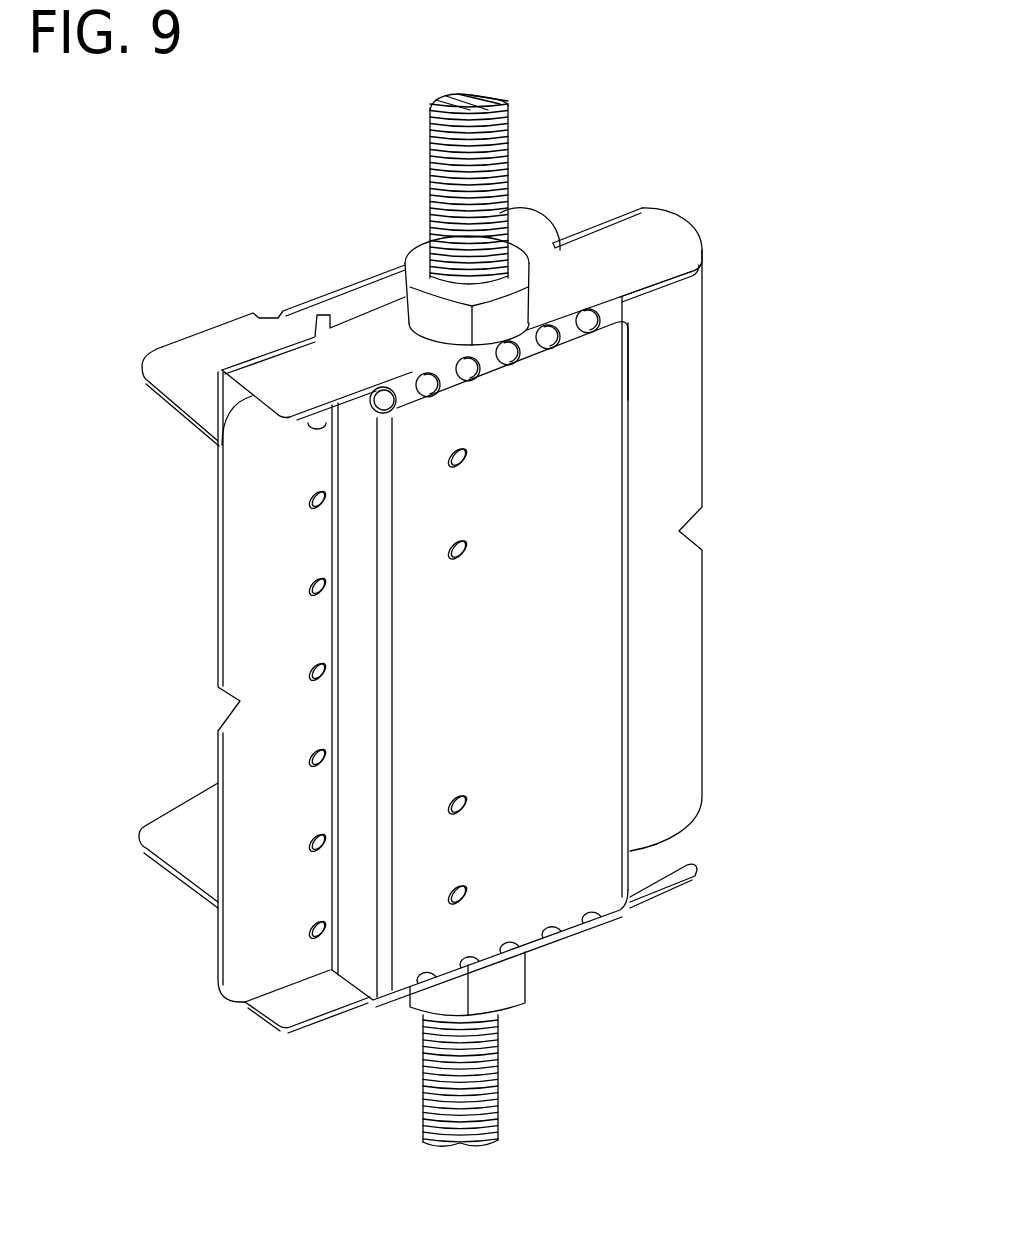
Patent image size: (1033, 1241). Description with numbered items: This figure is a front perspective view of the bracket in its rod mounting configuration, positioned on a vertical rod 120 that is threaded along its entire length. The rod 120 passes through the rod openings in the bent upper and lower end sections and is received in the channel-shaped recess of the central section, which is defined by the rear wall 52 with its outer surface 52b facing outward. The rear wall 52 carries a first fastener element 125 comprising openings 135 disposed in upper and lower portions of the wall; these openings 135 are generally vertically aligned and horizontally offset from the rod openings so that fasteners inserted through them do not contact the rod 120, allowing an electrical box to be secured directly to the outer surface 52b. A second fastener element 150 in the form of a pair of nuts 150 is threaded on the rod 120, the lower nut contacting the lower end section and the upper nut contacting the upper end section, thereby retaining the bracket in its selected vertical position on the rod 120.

The vertical rod 120 is at (508, 152).
The second fastener element 150 is at (522, 278).
The rear wall 52 is at (540, 540).
The outer surface 52b is at (563, 639).
The first fastener element 125 is at (447, 462).
The openings 135 is at (243, 694).